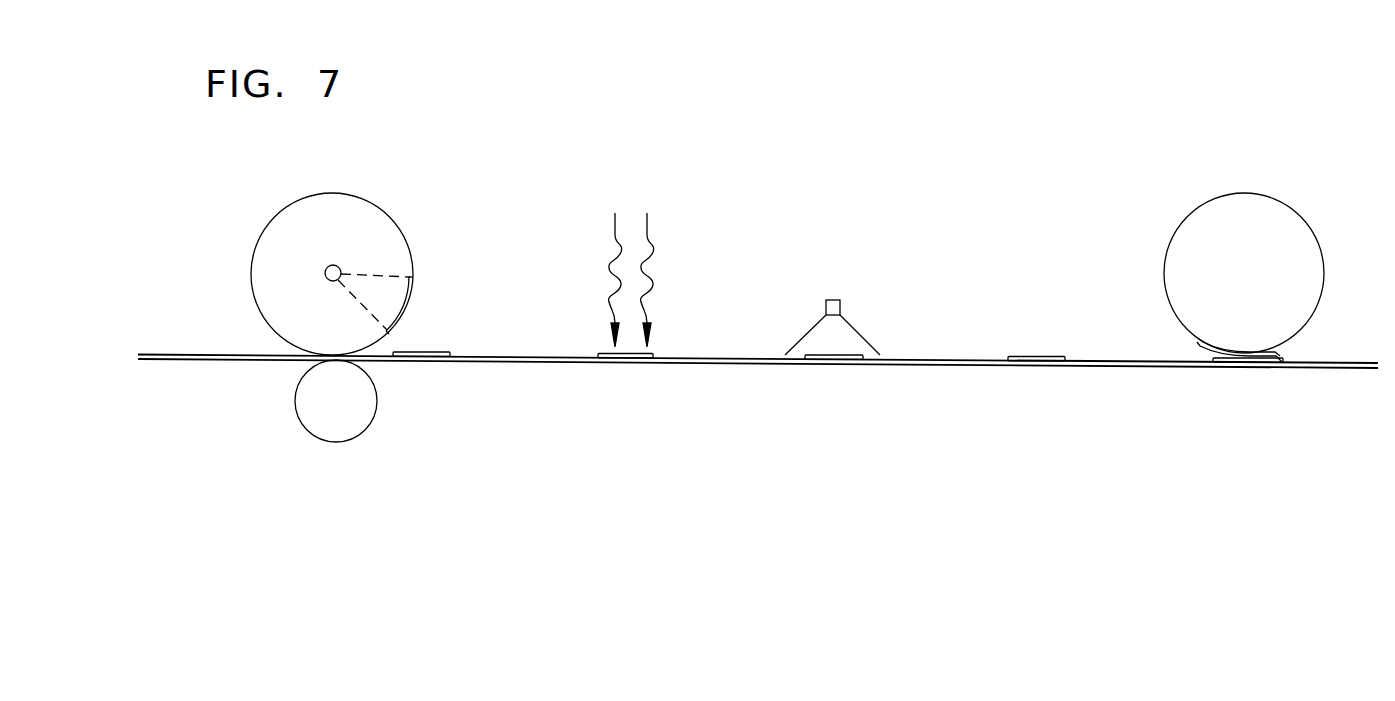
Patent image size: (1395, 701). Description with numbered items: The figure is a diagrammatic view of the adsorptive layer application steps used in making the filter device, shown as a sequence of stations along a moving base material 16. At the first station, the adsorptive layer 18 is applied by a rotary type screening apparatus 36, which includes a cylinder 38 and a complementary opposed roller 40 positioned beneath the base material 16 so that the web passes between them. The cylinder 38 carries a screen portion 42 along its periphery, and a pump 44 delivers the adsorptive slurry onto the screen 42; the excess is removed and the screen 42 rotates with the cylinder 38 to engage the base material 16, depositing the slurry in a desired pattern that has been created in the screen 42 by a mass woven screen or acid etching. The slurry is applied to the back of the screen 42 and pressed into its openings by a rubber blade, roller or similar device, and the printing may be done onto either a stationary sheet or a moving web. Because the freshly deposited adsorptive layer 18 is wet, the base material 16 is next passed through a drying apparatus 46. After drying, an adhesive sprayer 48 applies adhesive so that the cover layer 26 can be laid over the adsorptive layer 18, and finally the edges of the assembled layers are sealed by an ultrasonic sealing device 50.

The base material 16 is at (548, 362).
The adsorptive layer 18 is at (450, 352).
The cover layer 26 is at (1280, 357).
The screening apparatus 36 is at (329, 234).
The cylinder 38 is at (373, 215).
The complementary opposed roller 40 is at (362, 427).
The screen portion 42 is at (408, 295).
The pump 44 is at (325, 273).
The drying apparatus 46 is at (632, 268).
The adhesive sprayer 48 is at (833, 300).
The ultrasonic sealing device 50 is at (1163, 276).